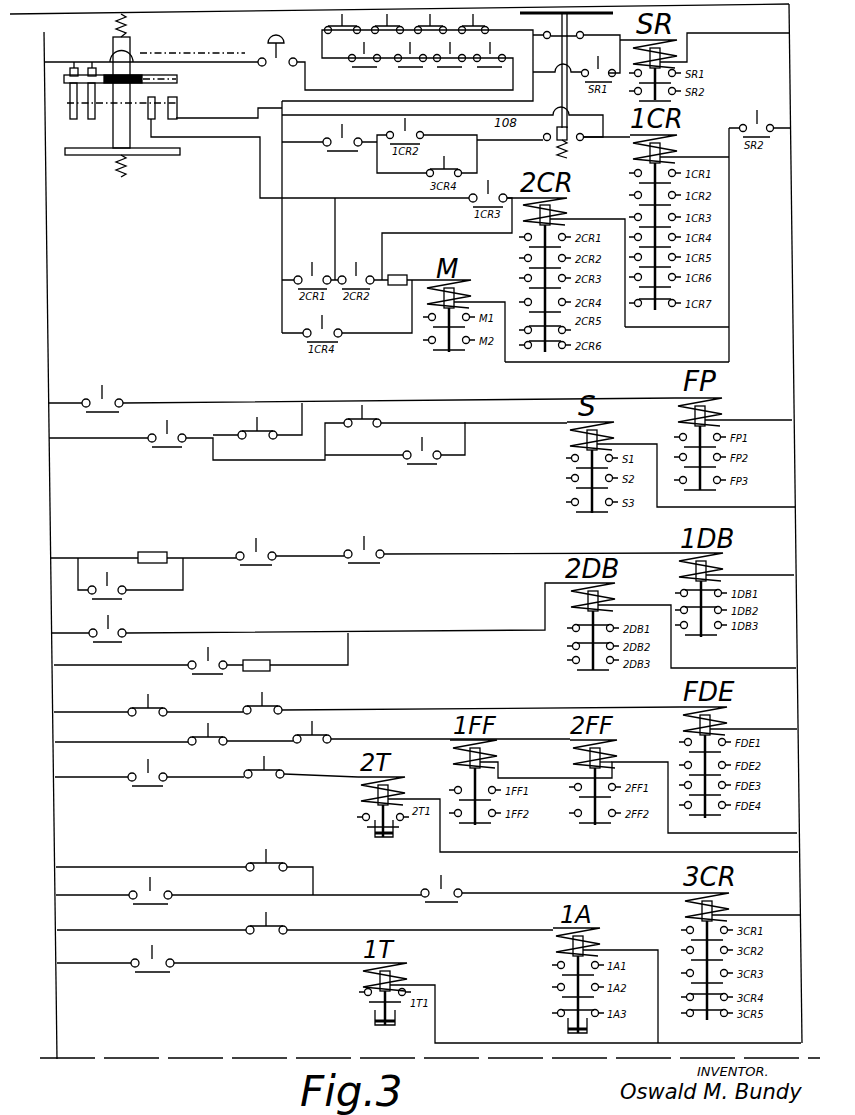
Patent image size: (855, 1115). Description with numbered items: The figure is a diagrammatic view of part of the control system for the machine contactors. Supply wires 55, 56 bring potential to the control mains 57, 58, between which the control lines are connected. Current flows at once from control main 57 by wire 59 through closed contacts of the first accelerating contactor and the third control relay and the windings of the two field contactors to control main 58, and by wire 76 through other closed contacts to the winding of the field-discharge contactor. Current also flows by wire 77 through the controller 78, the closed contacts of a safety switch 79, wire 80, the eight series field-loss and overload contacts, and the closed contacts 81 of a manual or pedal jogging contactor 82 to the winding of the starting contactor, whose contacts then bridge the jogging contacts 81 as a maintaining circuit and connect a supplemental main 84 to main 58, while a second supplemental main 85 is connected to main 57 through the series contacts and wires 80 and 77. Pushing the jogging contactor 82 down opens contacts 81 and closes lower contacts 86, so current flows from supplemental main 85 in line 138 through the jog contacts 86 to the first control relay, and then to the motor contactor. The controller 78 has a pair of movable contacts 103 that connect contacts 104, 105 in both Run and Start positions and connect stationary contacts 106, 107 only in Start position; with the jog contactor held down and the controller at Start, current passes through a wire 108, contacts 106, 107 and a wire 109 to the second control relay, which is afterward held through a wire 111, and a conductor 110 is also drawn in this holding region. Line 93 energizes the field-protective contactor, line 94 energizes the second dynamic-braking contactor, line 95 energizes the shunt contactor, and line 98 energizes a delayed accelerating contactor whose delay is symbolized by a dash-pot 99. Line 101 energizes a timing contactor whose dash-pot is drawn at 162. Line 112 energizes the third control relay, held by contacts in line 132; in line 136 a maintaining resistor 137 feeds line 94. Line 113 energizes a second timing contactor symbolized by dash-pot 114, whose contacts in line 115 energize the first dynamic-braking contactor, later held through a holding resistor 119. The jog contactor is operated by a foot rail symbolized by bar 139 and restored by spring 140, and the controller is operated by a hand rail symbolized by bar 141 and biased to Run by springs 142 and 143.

The wire 55 is at (50, 14).
The wire 56 is at (44, 62).
The control main 57 is at (46, 200).
The control main 58 is at (791, 193).
The wire 59 is at (55, 742).
The wire 76 is at (54, 712).
The wire 77 is at (267, 45).
The controller 78 is at (148, 102).
The safety switch 79 is at (280, 67).
The wire 80 is at (284, 101).
The closed contacts 81 is at (576, 34).
The jogging contactor 82 is at (516, 12).
The supplemental main 84 is at (731, 238).
The supplemental main 85 is at (280, 234).
The lower contacts 86 is at (582, 141).
The line 93 is at (48, 403).
The line 94 is at (52, 633).
The line 95 is at (49, 438).
The line 98 is at (57, 930).
The dash-pot 99 is at (565, 1031).
The line 101 is at (55, 777).
The contacts 103 is at (92, 66).
The contact 104 is at (73, 119).
The contact 105 is at (92, 119).
The stationary contact 106 is at (152, 119).
The stationary contact 107 is at (177, 110).
The wire 108 is at (229, 113).
The wire 109 is at (240, 138).
The conductor 110 is at (336, 246).
The wire 111 is at (418, 233).
The line 112 is at (56, 895).
The line 113 is at (57, 963).
The dash-pot 114 is at (388, 1026).
The line 115 is at (348, 572).
The holding resistor 119 is at (160, 552).
The line 132 is at (56, 867).
The line 136 is at (185, 664).
The maintaining resistor 137 is at (256, 660).
The line 138 is at (303, 140).
The bar 139 is at (603, 47).
The spring 140 is at (557, 152).
The bar 141 is at (80, 155).
The spring 142 is at (116, 172).
The spring 143 is at (127, 26).
The time delay dashpot 162 is at (383, 838).